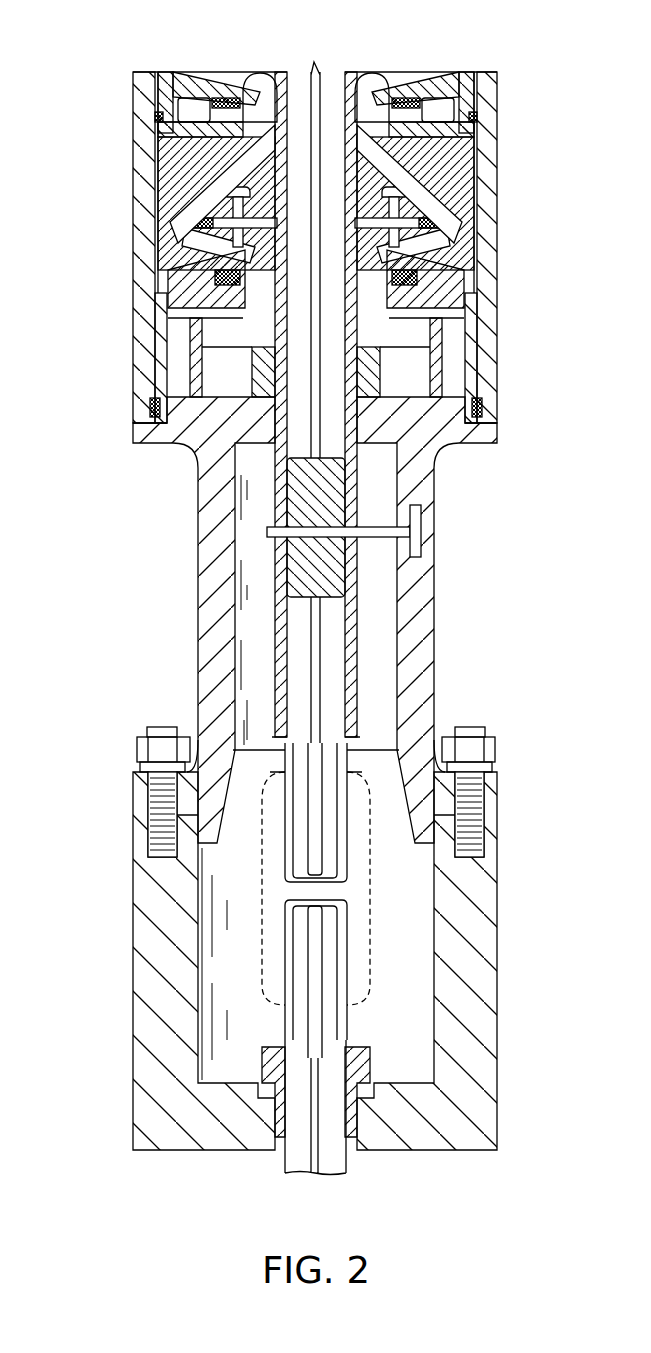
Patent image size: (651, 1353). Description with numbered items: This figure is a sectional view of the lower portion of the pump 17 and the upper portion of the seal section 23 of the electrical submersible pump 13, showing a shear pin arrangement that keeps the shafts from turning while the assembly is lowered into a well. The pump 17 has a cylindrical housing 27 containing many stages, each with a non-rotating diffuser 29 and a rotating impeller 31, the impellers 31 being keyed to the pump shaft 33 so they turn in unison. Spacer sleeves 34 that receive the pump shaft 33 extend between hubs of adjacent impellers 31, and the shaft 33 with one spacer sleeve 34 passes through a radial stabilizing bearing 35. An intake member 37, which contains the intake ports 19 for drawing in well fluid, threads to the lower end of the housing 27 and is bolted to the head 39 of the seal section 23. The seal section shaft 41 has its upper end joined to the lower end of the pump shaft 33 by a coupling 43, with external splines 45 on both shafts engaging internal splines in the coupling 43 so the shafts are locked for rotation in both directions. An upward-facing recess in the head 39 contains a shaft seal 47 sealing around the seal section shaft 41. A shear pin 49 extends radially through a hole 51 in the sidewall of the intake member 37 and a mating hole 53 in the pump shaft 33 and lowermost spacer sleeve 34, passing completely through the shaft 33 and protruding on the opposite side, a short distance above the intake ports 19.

The electrical submersible pump 13 is at (121, 524).
The pump 17 is at (121, 109).
The intake port 19 is at (230, 695).
The seal section 23 is at (131, 964).
The pump housing 27 is at (146, 188).
The diffuser 29 is at (432, 186).
The impeller 31 is at (207, 292).
The pump shaft 33 is at (330, 88).
The spacer sleeve 34 is at (265, 433).
The radial stabilizing bearing 35 is at (253, 363).
The intake member 37 is at (418, 652).
The head 39 is at (145, 1062).
The seal section shaft 41 is at (297, 1158).
The coupling 43 is at (370, 934).
The external splines 45 is at (337, 977).
The shaft seal 47 is at (370, 1060).
The shear pin 49 is at (387, 528).
The hole 51 is at (425, 552).
The pump shaft hole 53 is at (313, 537).